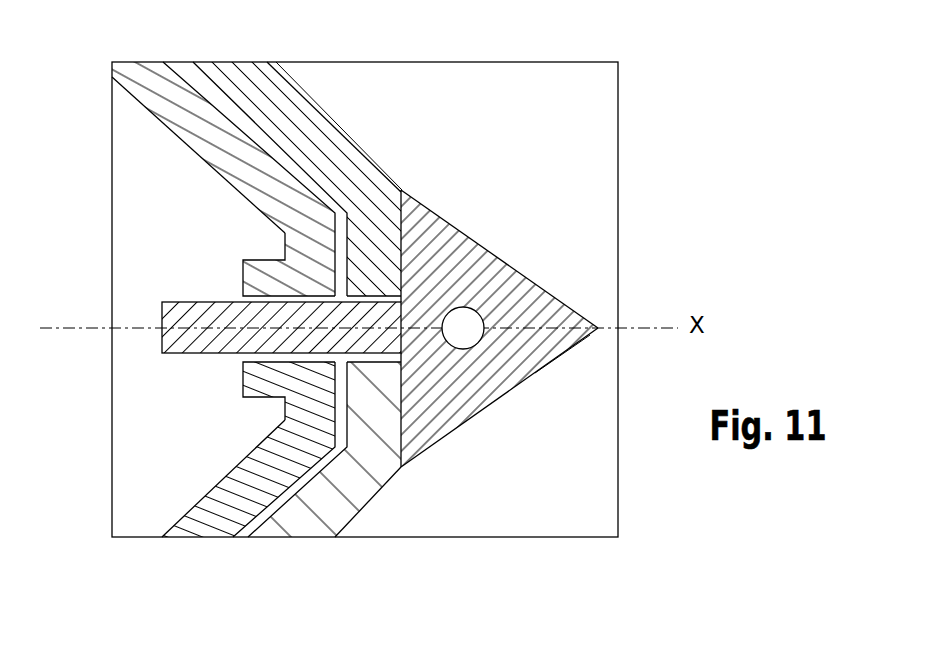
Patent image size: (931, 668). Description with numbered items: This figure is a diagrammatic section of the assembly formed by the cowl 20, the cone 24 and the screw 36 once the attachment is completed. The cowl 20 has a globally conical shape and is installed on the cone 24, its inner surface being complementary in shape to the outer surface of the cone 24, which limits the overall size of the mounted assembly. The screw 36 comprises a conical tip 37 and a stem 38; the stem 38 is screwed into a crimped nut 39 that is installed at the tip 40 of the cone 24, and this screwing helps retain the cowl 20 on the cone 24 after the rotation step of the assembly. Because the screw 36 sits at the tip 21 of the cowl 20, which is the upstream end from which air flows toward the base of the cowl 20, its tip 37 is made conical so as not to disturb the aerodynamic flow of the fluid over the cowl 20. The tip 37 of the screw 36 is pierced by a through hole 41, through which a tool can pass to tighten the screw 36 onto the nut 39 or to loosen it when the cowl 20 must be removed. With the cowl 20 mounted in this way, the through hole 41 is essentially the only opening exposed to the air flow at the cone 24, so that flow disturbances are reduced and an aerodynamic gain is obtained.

The cowl 20 is at (287, 548).
The tip of the cowl 21 is at (372, 407).
The cone 24 is at (202, 548).
The screw 36 is at (567, 362).
The tip of the screw 37 is at (531, 297).
The stem 38 is at (188, 344).
The crimped nut 39 is at (302, 288).
The tip of the cone 40 is at (302, 388).
The through hole 41 is at (463, 336).